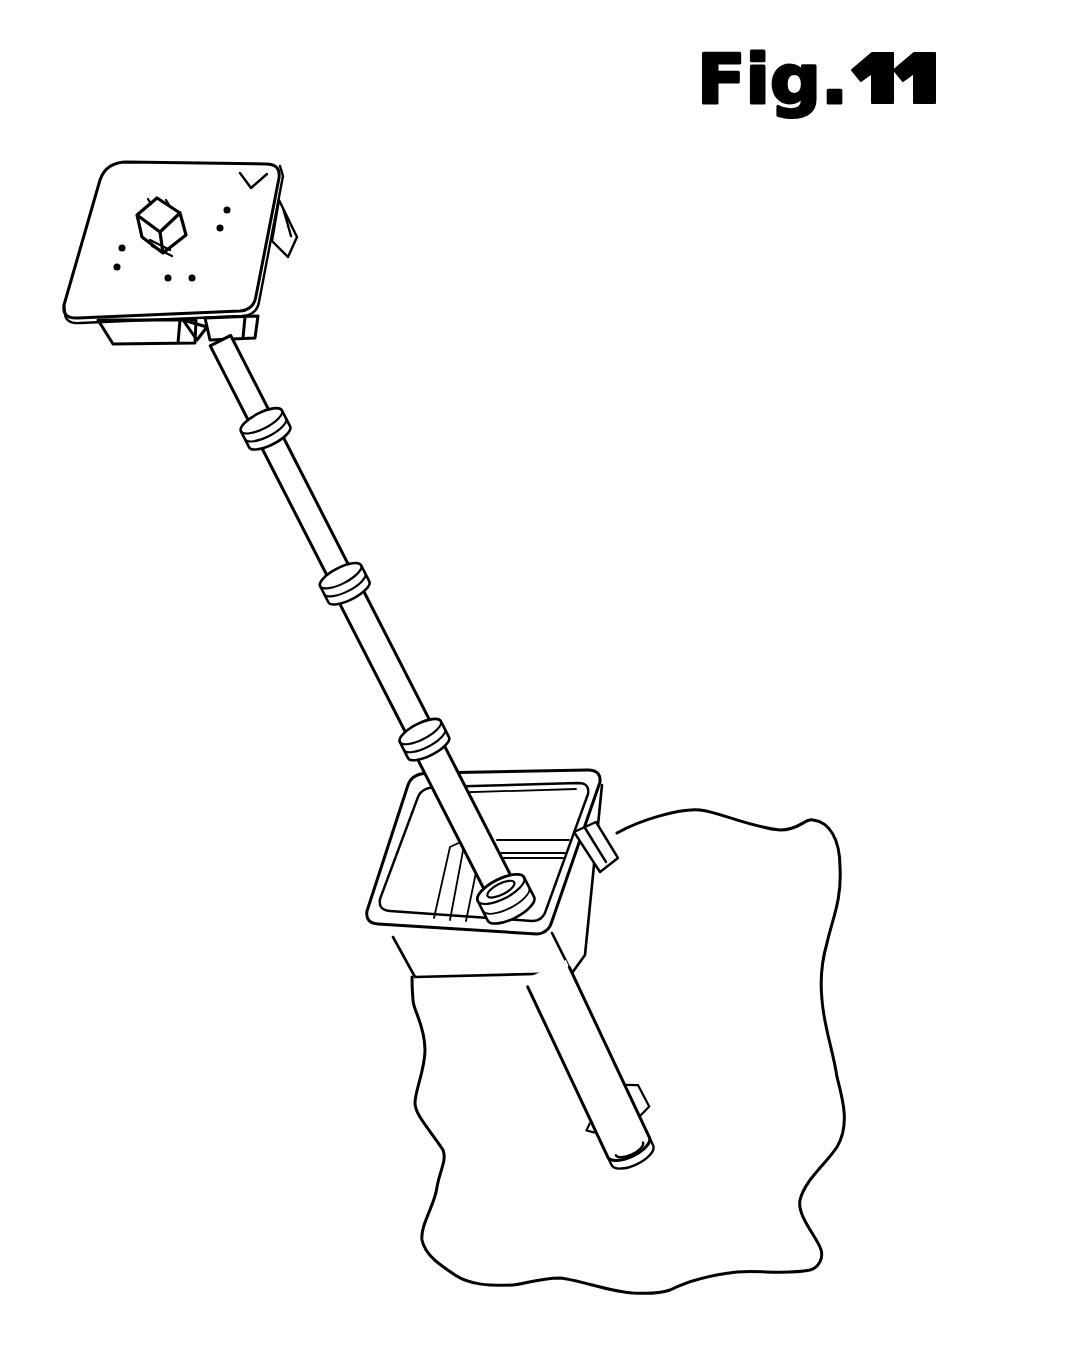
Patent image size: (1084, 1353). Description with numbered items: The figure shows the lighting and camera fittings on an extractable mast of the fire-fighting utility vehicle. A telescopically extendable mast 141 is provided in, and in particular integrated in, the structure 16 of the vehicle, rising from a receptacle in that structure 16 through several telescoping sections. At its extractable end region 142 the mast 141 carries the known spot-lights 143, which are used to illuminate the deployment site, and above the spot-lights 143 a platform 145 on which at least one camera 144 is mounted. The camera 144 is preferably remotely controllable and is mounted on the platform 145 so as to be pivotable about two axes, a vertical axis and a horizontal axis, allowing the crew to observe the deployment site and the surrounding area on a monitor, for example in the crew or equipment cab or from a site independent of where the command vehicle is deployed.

The structure 16 is at (723, 795).
The telescopically extendable mast 141 is at (366, 455).
The extractable end region 142 is at (287, 228).
The spot-lights 143 is at (262, 290).
The camera 144 is at (158, 212).
The platform 145 is at (273, 160).